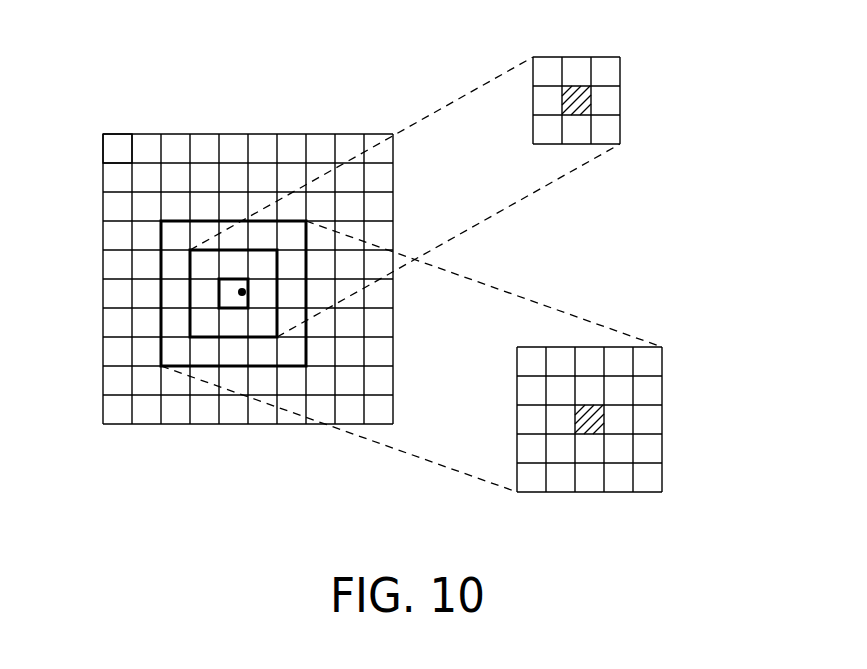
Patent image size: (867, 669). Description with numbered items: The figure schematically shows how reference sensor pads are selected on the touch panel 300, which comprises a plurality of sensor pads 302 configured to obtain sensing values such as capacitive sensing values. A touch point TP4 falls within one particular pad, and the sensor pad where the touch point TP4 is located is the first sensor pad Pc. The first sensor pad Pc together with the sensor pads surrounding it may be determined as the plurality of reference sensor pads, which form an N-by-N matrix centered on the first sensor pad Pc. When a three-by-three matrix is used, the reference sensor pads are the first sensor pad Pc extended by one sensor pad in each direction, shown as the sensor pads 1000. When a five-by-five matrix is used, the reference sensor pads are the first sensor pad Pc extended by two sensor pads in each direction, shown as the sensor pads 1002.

The touch panel 300 is at (353, 133).
The sensor pad 302 is at (120, 142).
The sensor pads 1000 is at (602, 56).
The sensor pads 1002 is at (660, 362).
The first sensor pad Pc is at (570, 19).
The touch point TP4 is at (240, 296).